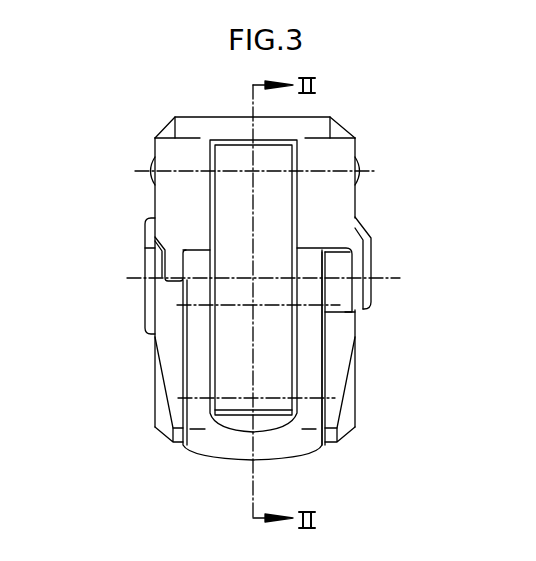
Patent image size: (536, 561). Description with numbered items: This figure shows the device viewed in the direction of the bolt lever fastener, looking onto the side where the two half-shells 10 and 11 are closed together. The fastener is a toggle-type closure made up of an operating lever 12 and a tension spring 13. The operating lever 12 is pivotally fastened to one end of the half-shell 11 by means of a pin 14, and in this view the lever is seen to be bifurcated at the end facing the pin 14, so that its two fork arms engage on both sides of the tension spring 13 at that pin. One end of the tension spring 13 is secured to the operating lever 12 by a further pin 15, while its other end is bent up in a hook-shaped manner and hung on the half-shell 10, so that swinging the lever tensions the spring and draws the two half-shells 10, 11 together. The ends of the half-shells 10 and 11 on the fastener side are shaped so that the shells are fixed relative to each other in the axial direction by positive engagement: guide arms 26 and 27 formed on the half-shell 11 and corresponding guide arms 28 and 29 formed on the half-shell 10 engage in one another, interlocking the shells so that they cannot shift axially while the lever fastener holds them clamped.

The half-shell 10 is at (177, 175).
The half-shell 11 is at (175, 382).
The operating lever 12 is at (197, 442).
The tension spring 13 is at (275, 218).
The pin 14 is at (325, 311).
The pin 15 is at (293, 400).
The guide arm 26 is at (148, 274).
The guide arm 27 is at (337, 270).
The guide arm 28 is at (173, 260).
The guide arm 29 is at (370, 297).